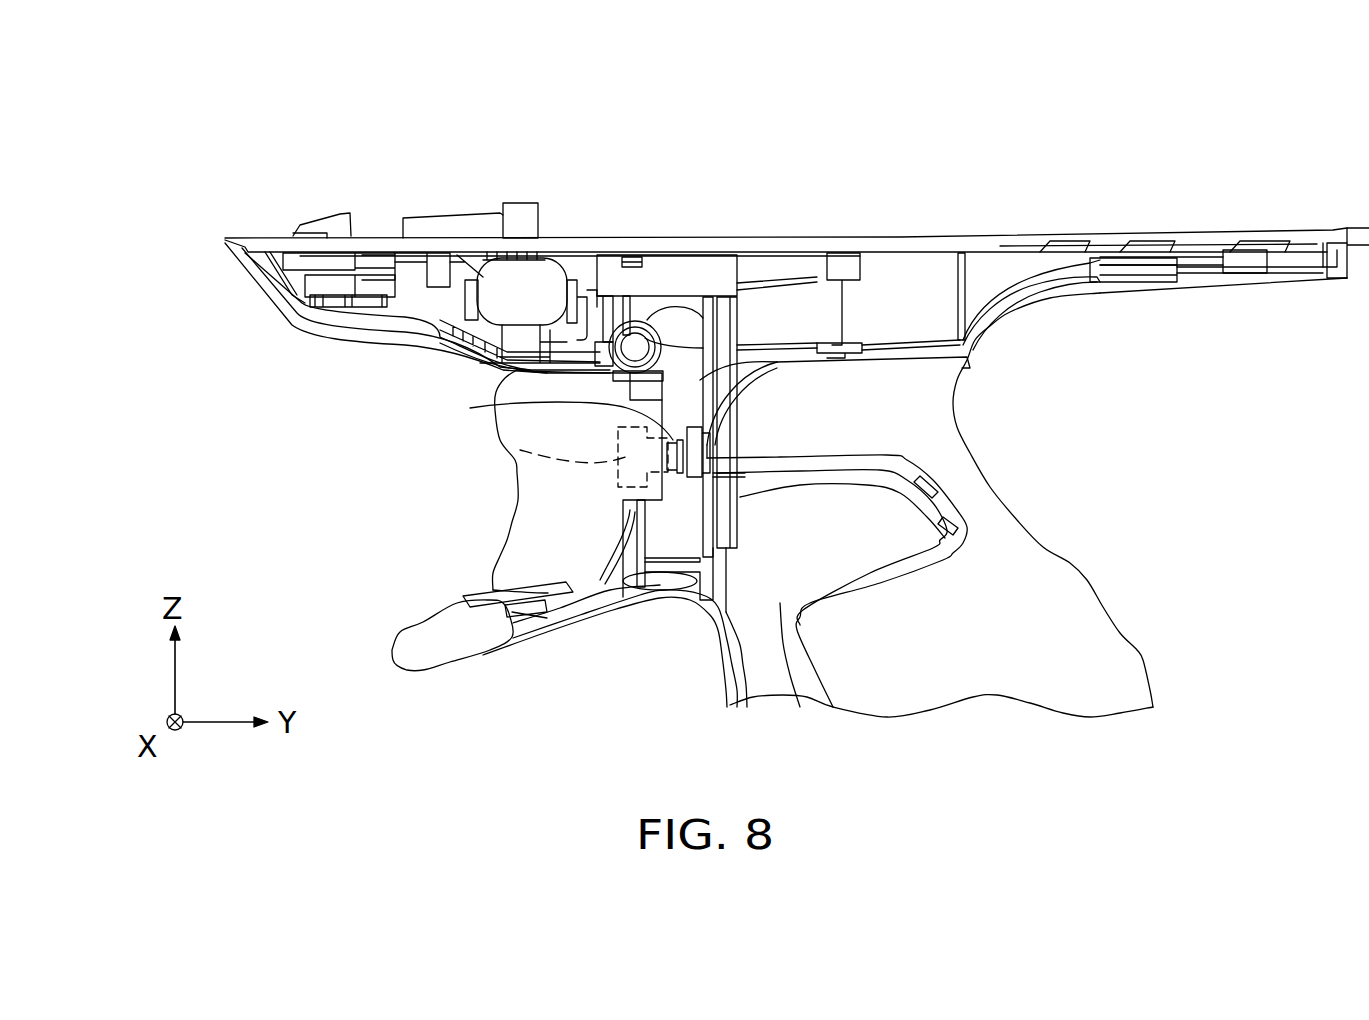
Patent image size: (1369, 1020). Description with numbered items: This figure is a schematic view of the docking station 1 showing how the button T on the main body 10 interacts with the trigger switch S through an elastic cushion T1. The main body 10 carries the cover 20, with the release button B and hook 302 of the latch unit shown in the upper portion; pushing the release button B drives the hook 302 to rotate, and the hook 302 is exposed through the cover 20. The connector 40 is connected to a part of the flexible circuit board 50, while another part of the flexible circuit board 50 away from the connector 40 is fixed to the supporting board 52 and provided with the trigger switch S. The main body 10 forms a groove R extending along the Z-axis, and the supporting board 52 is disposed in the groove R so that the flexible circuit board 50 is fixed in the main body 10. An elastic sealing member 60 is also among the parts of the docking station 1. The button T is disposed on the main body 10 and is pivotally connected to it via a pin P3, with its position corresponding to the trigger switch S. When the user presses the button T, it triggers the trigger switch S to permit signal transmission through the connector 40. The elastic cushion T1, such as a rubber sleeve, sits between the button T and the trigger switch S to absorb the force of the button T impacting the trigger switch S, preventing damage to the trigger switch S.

The docking station 1 is at (190, 114).
The main body 10 is at (236, 285).
The cover 20 is at (853, 241).
The connector 40 is at (333, 232).
The elastic sealing member 60 is at (300, 233).
The hook 302 is at (521, 222).
The release button B is at (545, 293).
The pin P3 is at (632, 348).
The flexible circuit board 50 is at (708, 323).
The supporting board 52 is at (718, 307).
The groove R is at (738, 297).
The trigger switch S is at (470, 408).
The button T is at (498, 502).
The elastic cushion T1 is at (520, 450).